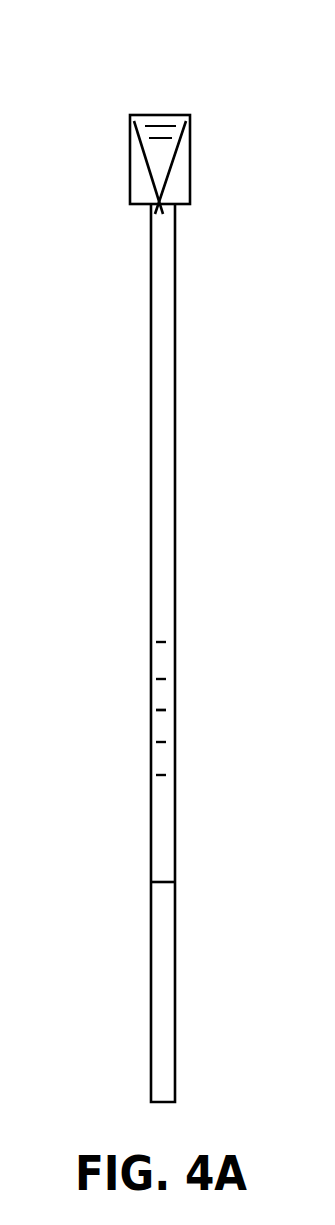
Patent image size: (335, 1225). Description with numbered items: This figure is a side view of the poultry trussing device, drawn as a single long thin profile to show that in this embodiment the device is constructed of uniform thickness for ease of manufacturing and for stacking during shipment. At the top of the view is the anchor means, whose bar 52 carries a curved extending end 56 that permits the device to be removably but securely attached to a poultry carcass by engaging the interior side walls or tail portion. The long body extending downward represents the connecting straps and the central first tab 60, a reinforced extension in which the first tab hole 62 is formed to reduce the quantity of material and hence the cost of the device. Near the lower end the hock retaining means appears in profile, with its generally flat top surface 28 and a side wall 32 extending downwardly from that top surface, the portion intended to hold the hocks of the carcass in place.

The flat top surface 28 is at (149, 1028).
The side wall 32 is at (163, 918).
The bar 52 is at (160, 117).
The extending end 56 is at (153, 206).
The first tab 60 is at (162, 660).
The first tab hole 62 is at (162, 704).